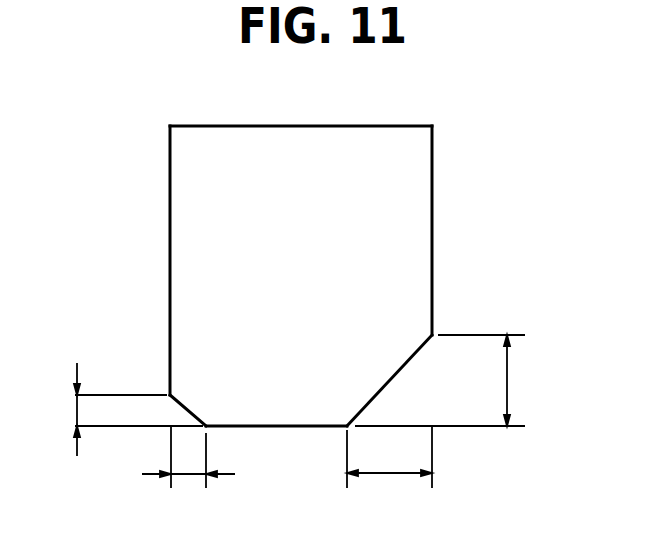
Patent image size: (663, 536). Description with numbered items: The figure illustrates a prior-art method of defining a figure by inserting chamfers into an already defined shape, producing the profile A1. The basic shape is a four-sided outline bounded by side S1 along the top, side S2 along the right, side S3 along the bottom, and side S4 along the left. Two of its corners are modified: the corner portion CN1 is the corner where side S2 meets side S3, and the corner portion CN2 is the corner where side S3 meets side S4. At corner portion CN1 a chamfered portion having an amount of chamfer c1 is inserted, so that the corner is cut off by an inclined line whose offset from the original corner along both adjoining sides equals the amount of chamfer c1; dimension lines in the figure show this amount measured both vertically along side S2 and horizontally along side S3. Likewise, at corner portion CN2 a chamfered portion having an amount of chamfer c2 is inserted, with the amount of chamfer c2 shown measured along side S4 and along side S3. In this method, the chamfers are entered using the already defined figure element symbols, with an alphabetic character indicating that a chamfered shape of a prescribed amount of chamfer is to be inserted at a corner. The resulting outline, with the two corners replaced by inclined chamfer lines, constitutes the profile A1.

The profile A1 is at (395, 125).
The side S1 is at (222, 126).
The side S2 is at (433, 240).
The side S3 is at (307, 428).
The side S4 is at (170, 252).
The corner portion CN1 is at (402, 382).
The corner portion CN2 is at (180, 415).
The amount of chamfer c1 is at (440, 411).
The amount of chamfer c2 is at (141, 435).